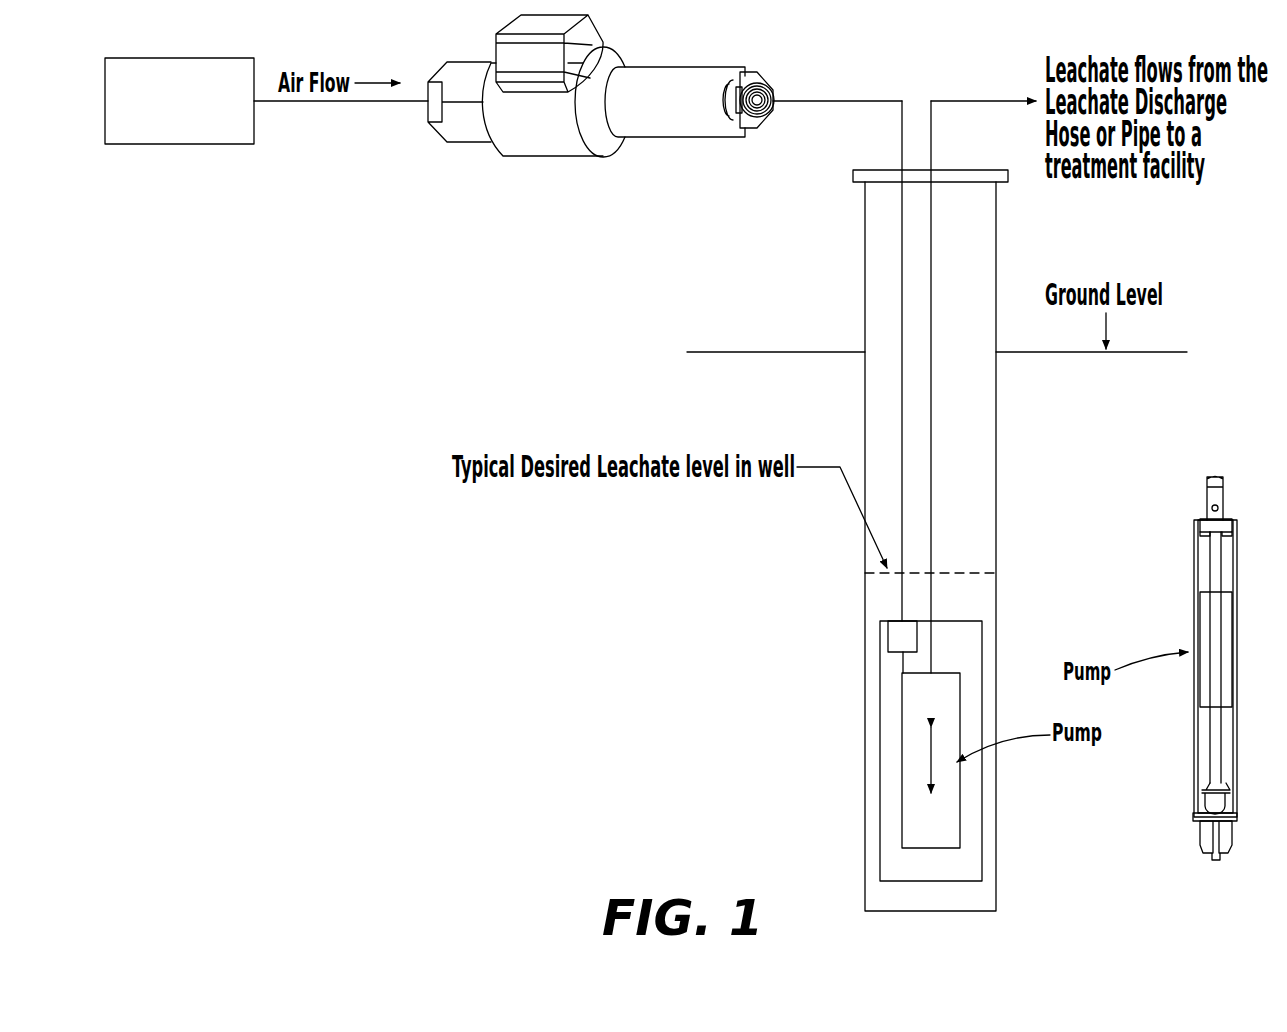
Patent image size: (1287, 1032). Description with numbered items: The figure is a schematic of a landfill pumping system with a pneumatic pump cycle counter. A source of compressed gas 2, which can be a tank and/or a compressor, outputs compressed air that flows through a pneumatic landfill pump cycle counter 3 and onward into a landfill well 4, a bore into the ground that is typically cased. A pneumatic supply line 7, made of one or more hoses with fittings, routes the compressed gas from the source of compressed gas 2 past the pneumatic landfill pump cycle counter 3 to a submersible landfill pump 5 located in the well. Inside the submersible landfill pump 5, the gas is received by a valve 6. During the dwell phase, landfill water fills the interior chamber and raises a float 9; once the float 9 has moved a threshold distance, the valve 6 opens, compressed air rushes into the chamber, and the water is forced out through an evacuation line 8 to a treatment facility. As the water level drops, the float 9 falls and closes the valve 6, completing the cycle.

The source of compressed gas 2 is at (180, 138).
The pneumatic landfill pump cycle counter 3 is at (540, 145).
The landfill well 4 is at (864, 215).
The submersible landfill pump 5 is at (880, 714).
The valve 6 is at (895, 637).
The pneumatic supply line 7 is at (900, 285).
The evacuation line 8 is at (931, 403).
The float 9 is at (905, 798).